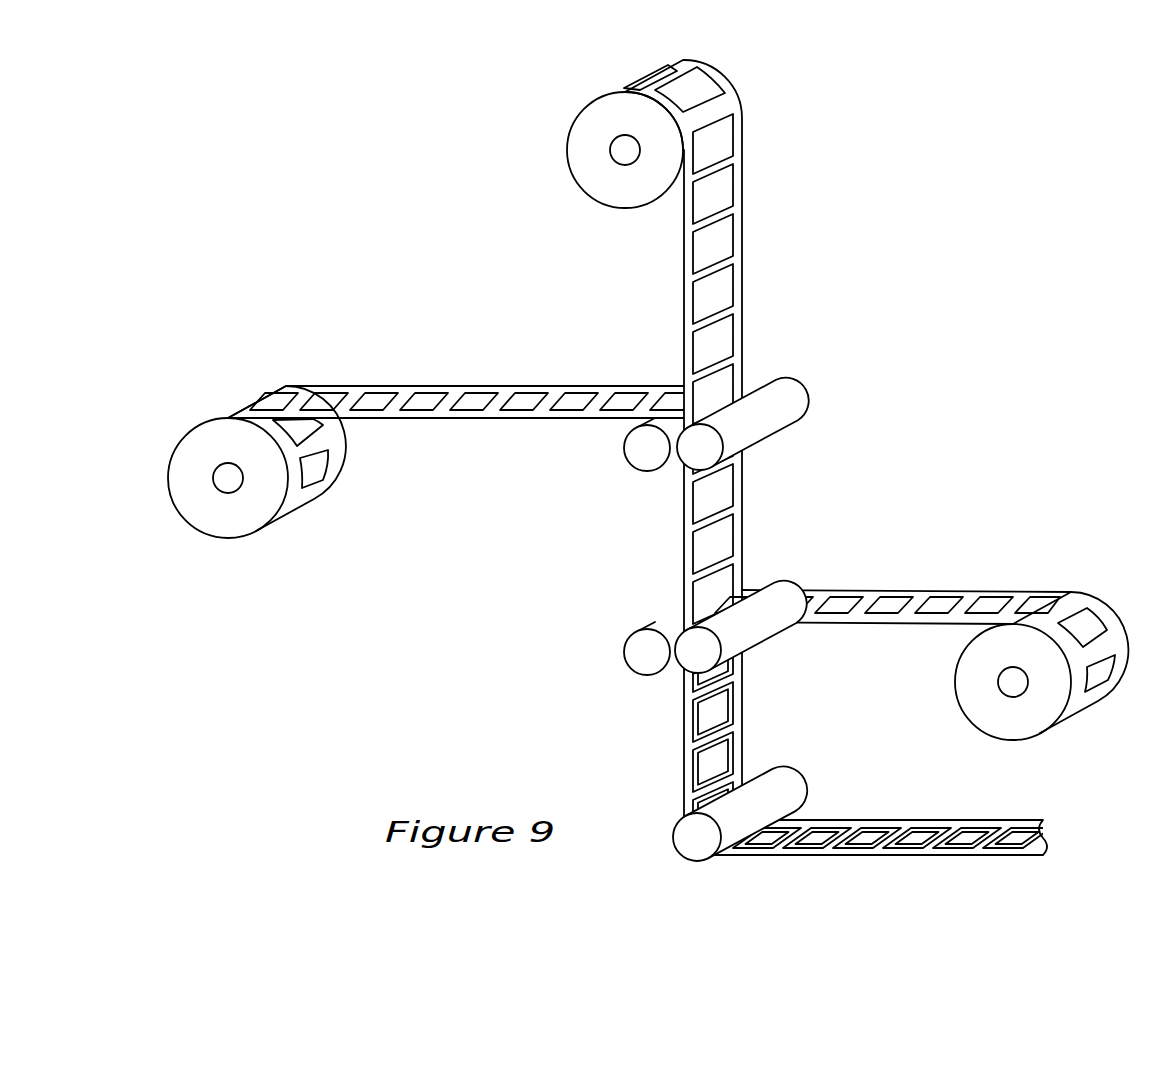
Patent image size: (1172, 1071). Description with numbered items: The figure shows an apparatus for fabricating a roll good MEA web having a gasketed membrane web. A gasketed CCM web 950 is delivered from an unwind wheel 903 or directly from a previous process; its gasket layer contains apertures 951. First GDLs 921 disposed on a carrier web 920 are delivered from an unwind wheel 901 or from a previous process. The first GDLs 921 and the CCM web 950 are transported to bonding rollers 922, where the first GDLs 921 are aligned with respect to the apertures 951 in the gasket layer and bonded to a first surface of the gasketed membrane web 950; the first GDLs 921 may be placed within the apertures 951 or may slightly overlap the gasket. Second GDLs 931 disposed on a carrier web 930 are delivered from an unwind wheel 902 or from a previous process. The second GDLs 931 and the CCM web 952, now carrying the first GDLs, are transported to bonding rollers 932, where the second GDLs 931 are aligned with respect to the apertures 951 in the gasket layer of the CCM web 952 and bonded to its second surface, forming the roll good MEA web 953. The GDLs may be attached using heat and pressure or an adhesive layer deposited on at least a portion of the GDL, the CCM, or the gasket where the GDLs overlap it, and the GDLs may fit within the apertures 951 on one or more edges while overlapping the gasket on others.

The unwind wheel 901 is at (200, 515).
The unwind wheel 902 is at (985, 717).
The unwind wheel 903 is at (583, 152).
The carrier web 920 is at (503, 417).
The first GDLs 921 is at (417, 403).
The bonding rollers 922 is at (688, 458).
The carrier web 930 is at (903, 593).
The second GDLs 931 is at (842, 603).
The bonding rollers 932 is at (688, 660).
The gasketed CCM web 950 is at (737, 200).
The apertures 951 is at (718, 288).
The CCM web 952 is at (737, 505).
The roll good MEA web 953 is at (865, 823).